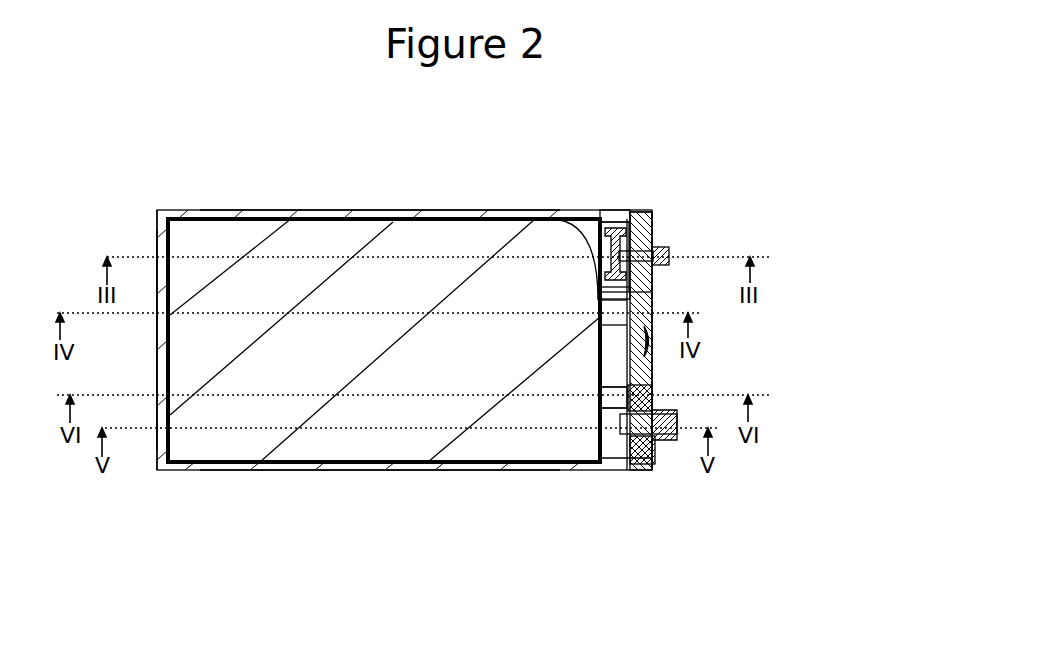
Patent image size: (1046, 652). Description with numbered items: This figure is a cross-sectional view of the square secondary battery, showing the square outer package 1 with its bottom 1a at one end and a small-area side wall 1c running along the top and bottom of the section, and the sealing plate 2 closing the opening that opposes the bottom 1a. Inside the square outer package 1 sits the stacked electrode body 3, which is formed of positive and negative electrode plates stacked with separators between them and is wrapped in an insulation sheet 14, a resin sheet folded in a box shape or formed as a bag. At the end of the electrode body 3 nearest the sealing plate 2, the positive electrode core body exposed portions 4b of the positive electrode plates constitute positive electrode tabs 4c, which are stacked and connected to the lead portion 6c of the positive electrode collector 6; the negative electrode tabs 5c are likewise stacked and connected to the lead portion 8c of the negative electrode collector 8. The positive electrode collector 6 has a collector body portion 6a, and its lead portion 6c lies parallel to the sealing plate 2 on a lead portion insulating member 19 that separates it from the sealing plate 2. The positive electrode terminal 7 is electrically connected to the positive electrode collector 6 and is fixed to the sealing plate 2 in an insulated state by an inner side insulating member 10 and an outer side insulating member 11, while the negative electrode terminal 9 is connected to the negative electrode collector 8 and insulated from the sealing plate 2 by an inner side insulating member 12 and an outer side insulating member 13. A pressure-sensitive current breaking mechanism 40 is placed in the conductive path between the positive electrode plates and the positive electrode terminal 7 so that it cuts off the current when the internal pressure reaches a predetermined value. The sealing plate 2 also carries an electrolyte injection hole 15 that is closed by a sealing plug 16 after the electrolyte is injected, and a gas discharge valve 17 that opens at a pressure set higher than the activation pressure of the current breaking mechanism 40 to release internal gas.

The square outer package 1 is at (267, 212).
The bottom 1a is at (157, 353).
The small-area side walls 1c is at (337, 210).
The sealing plate 2 is at (658, 232).
The stacked electrode body 3 is at (397, 248).
The positive electrode tab 4c is at (510, 225).
The positive electrode core body exposed portion 4b is at (588, 260).
The negative electrode tab 5c is at (536, 465).
The positive electrode collector 6 is at (605, 357).
The collector body portion 6a is at (603, 215).
The lead portion 6c is at (600, 310).
The positive electrode terminal 7 is at (662, 246).
The negative electrode collector 8 is at (612, 427).
The lead portion 8c is at (608, 402).
The negative electrode terminal 9 is at (665, 440).
The inner side insulating member 10 is at (655, 222).
The outer side insulating member 11 is at (660, 240).
The inner side insulating member 12 is at (640, 455).
The outer side insulating member 13 is at (655, 447).
The insulation sheet 14 is at (197, 208).
The electrolyte injection hole 15 is at (652, 375).
The sealing plug 16 is at (652, 362).
The gas discharge valve 17 is at (652, 350).
The lead portion insulating member 19 is at (655, 292).
The pressure-sensitive current breaking mechanism 40 is at (632, 236).